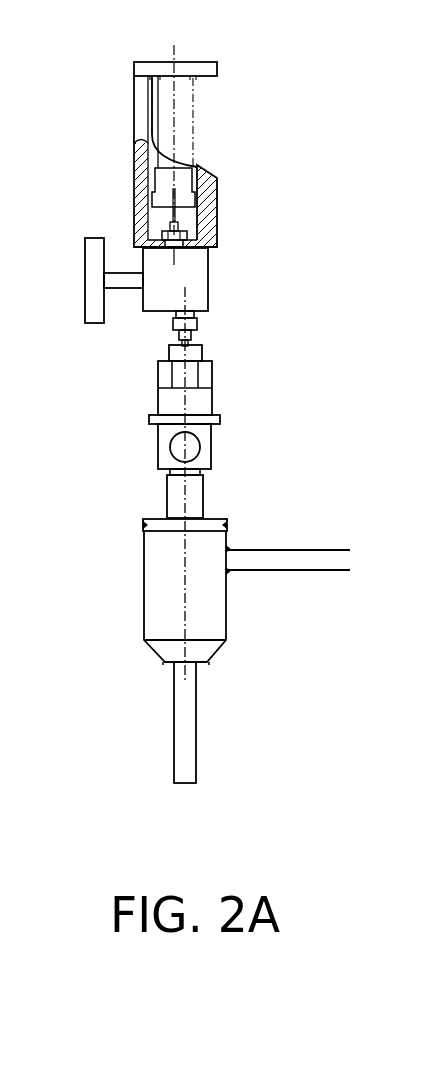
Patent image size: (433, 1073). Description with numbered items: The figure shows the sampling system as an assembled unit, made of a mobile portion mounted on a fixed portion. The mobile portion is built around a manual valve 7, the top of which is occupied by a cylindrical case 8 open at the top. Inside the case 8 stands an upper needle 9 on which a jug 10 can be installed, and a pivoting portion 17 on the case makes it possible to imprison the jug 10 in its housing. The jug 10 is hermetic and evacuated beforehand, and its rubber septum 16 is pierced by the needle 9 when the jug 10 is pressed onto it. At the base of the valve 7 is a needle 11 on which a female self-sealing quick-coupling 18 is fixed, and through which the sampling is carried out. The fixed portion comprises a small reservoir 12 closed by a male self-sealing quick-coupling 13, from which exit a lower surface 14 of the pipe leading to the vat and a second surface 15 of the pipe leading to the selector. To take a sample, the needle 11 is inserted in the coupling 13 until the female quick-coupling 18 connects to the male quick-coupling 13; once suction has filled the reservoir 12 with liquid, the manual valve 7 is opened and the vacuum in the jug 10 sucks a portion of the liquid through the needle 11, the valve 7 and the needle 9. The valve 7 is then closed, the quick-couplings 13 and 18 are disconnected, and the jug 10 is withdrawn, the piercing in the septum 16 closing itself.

The manual valve 7 is at (198, 298).
The cylindrical case 8 is at (205, 200).
The upper needle 9 is at (200, 232).
The jug 10 is at (185, 125).
The needle 11 is at (185, 497).
The small reservoir 12 is at (160, 593).
The male self-sealing quick-coupling 13 is at (173, 502).
The lower surface of the pipe 14 is at (186, 760).
The second surface of the pipe 15 is at (273, 560).
The septum 16 is at (161, 200).
The pivoting portion 17 is at (208, 72).
The female self-sealing quick-coupling 18 is at (170, 447).